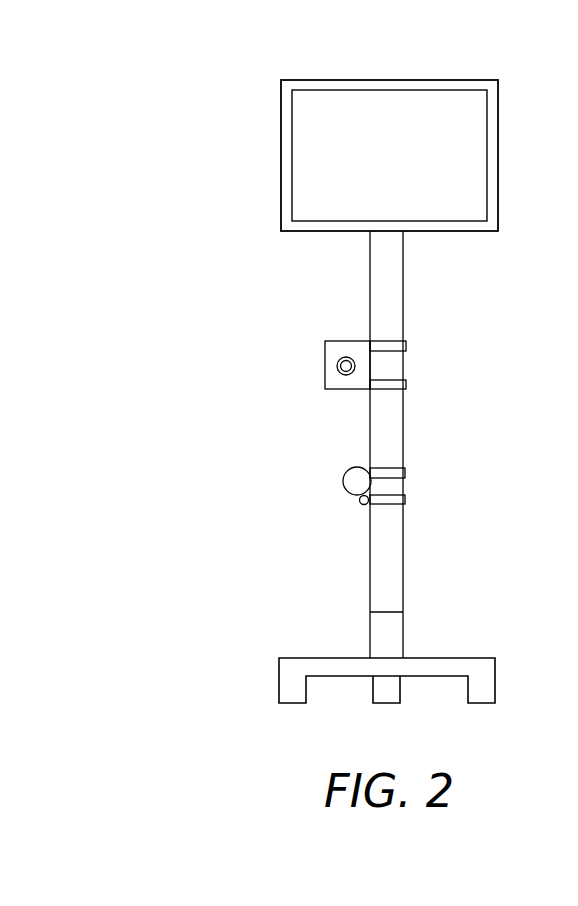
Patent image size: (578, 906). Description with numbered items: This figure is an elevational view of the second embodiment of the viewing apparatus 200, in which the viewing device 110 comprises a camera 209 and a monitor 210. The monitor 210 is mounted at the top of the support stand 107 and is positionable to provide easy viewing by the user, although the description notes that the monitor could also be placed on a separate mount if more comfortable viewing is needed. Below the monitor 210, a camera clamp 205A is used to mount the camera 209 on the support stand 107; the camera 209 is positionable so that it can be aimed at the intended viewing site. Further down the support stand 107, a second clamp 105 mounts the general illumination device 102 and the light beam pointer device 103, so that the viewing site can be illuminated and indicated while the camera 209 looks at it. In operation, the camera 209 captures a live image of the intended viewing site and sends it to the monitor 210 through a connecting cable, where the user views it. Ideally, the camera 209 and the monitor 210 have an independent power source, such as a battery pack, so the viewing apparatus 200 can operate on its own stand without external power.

The viewing apparatus 200 is at (176, 114).
The monitor 210 is at (347, 152).
The viewing device 110 is at (323, 348).
The camera 209 is at (323, 375).
The camera clamp 205A is at (403, 383).
The clamp 105 is at (404, 475).
The general illumination device 102 is at (344, 480).
The light beam pointer device 103 is at (362, 503).
The support stand 107 is at (378, 597).